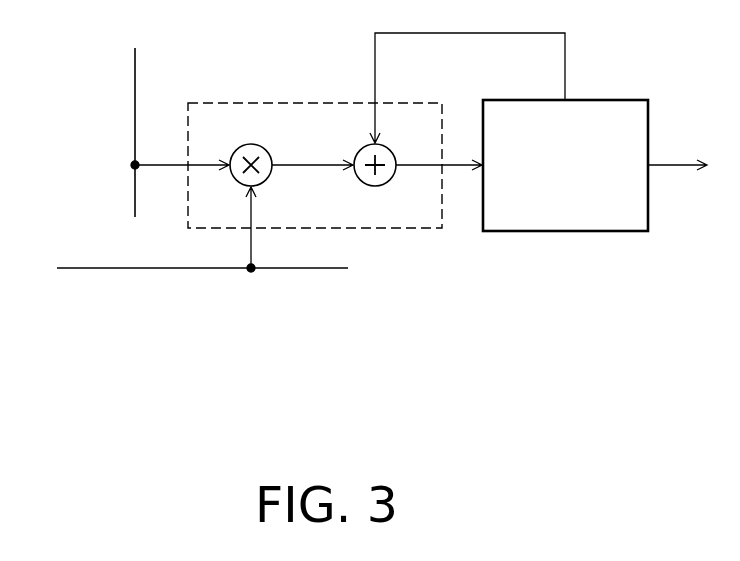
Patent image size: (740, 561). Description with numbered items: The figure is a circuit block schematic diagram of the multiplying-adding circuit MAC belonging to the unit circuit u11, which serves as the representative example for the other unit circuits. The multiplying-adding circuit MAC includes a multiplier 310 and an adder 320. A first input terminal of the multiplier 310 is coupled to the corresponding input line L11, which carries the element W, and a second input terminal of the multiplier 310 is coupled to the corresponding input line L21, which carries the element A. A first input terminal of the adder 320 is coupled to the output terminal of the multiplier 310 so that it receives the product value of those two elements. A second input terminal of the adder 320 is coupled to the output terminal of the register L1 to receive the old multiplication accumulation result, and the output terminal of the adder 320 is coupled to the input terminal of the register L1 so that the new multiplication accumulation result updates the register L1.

The multiplier 310 is at (248, 144).
The adder 320 is at (373, 187).
The register L1 is at (563, 231).
The input line L21 is at (134, 117).
The input line L11 is at (104, 268).
The multiplying-adding circuit MAC is at (325, 228).
The unit circuit u11 is at (360, 229).